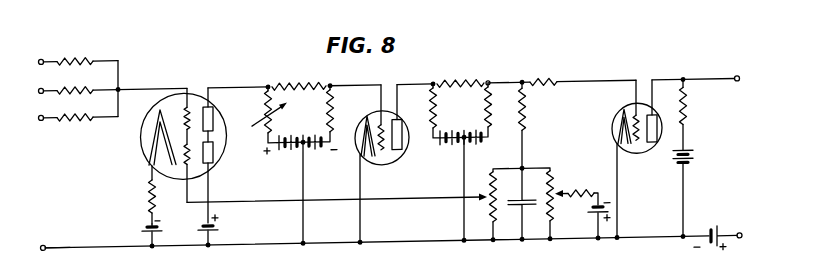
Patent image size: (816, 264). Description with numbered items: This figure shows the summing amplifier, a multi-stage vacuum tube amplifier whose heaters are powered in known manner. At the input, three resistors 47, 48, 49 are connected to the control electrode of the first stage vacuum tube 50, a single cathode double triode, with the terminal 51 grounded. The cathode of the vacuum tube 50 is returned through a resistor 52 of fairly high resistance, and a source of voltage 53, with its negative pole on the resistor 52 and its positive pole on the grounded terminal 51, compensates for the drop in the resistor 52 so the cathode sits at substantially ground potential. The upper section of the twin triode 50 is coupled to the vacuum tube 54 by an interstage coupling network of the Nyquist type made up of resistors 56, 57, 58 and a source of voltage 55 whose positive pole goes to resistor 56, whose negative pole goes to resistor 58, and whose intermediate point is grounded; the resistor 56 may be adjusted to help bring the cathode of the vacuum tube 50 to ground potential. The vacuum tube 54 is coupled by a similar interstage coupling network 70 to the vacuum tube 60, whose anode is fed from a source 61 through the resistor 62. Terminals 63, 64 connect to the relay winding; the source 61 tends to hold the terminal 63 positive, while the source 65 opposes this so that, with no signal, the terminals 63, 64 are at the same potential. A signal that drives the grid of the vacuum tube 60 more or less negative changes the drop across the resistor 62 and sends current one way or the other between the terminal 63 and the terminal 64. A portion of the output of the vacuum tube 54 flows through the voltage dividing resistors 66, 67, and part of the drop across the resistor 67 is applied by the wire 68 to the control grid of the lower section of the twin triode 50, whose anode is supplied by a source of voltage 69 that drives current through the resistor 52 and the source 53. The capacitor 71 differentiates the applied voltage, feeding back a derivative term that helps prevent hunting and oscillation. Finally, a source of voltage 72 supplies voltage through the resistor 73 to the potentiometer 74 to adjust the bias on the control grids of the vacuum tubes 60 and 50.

The resistor 47 is at (68, 56).
The resistor 48 is at (68, 85).
The resistor 49 is at (68, 112).
The vacuum tube 50 is at (141, 149).
The terminal 51 is at (45, 243).
The resistor 52 is at (148, 198).
The source of voltage 53 is at (165, 232).
The vacuum tube 54 is at (384, 165).
The source of voltage 55 is at (301, 150).
The resistor 56 is at (262, 104).
The resistor 57 is at (302, 84).
The resistor 58 is at (338, 104).
The vacuum tube 60 is at (632, 163).
The source 61 is at (699, 170).
The resistor 62 is at (690, 113).
The terminal 63 is at (738, 93).
The terminal 64 is at (739, 249).
The source 65 is at (712, 238).
The resistor 66 is at (532, 110).
The resistor 67 is at (489, 187).
The wire 68 is at (388, 204).
The source of voltage 69 is at (221, 233).
The resistor network 70 is at (441, 109).
The capacitor 71 is at (522, 213).
The source of voltage 72 is at (586, 230).
The resistor 73 is at (582, 197).
The potentiometer 74 is at (558, 182).